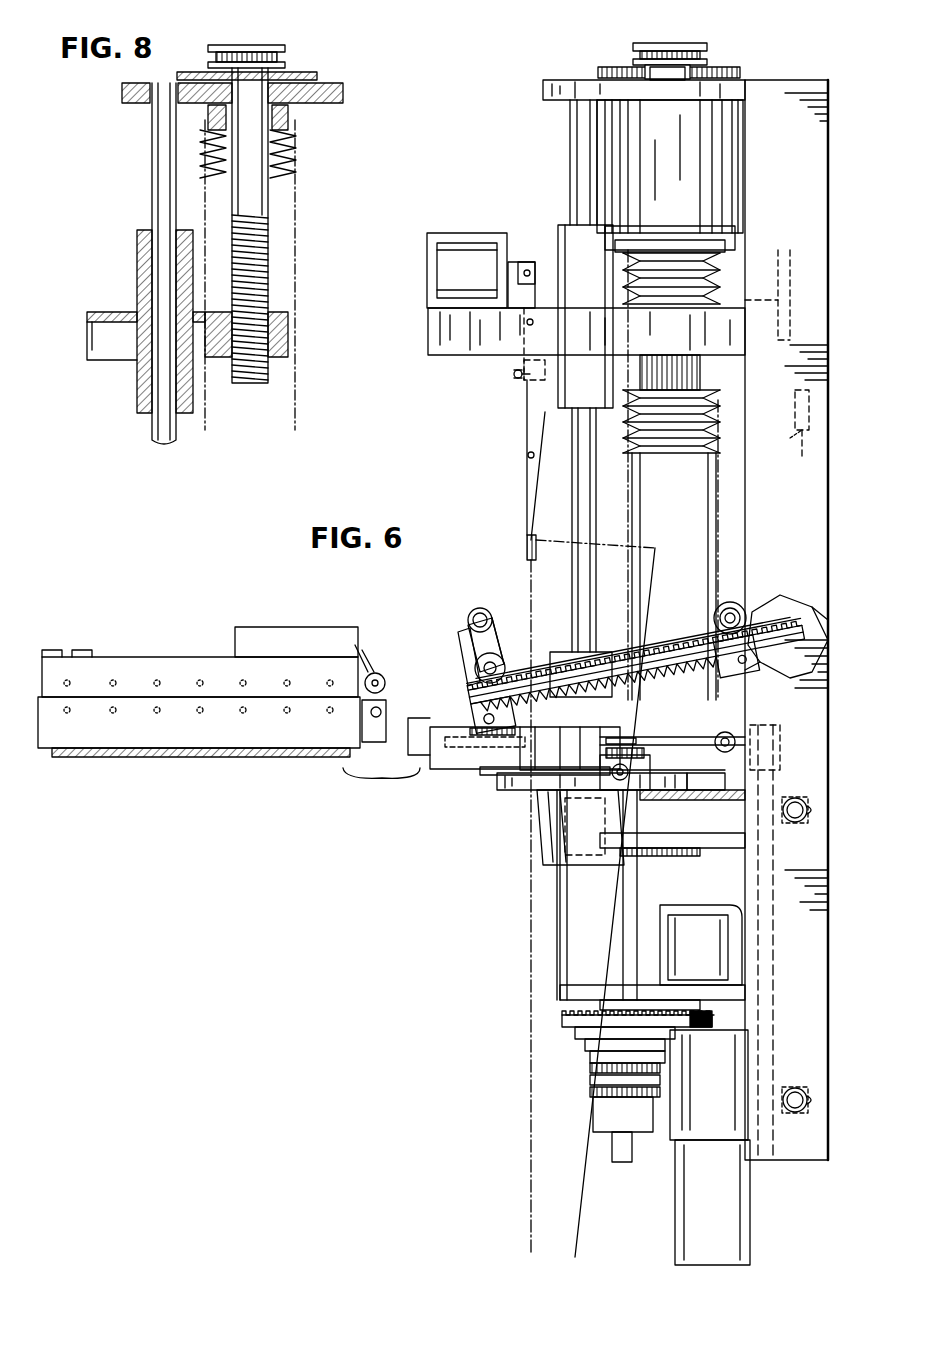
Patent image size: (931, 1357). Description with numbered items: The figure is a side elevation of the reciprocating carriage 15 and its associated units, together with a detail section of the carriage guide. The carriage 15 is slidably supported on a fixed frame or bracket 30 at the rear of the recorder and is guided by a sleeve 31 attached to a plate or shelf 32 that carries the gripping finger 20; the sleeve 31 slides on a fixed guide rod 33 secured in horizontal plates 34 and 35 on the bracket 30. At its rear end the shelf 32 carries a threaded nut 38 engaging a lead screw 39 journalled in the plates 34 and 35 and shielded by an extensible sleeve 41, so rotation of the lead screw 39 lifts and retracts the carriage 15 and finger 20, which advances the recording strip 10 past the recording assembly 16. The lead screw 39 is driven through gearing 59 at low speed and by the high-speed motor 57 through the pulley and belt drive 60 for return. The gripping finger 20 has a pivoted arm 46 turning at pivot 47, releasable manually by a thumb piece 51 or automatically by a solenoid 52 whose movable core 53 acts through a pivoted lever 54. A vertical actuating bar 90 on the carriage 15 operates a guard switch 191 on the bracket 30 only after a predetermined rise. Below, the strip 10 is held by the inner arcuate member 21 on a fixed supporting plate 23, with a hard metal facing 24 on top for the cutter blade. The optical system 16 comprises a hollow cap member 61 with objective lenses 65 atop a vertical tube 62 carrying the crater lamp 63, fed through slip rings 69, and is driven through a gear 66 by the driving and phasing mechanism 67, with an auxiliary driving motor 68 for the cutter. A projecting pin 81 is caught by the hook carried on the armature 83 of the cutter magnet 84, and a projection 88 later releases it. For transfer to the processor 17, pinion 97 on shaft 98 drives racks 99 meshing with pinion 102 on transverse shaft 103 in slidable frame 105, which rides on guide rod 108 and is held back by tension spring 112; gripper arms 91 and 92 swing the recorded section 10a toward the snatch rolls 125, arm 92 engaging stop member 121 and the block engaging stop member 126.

In FIG. 6, the recording strip 10 is at (530, 938).
In FIG. 6, the recorded section 10a is at (645, 560).
In FIG. 6, the reciprocating carriage 15 is at (475, 358).
In FIG. 6, the recording assembly 16 is at (648, 798).
In FIG. 6, the processing unit 17 is at (198, 650).
In FIG. 6, the gripping finger 20 is at (522, 545).
In FIG. 6, the inner arcuate member 21 is at (503, 787).
In FIG. 6, the fixed supporting plate 23 is at (720, 792).
In FIG. 6, the hard metal facing 24 is at (688, 774).
In FIG. 6, the fixed frame or bracket 30 is at (785, 92).
In FIG. 8, the sleeve 31 is at (140, 256).
In FIG. 6, the sleeve 31 is at (560, 235).
In FIG. 8, the plate or shelf 32 is at (105, 345).
In FIG. 6, the plate or shelf 32 is at (428, 330).
In FIG. 8, the fixed guide rod 33 is at (155, 157).
In FIG. 6, the fixed guide rod 33 is at (575, 166).
In FIG. 8, the horizontal plate 34 is at (330, 90).
In FIG. 6, the horizontal plate 34 is at (548, 86).
In FIG. 6, the horizontal plate 35 is at (560, 652).
In FIG. 8, the threaded nut 38 is at (286, 336).
In FIG. 8, the lead screw 39 is at (258, 244).
In FIG. 8, the extensible sleeve 41 is at (296, 152).
In FIG. 6, the extensible sleeve 41 is at (708, 415).
In FIG. 6, the pivoted arm 46 is at (527, 472).
In FIG. 6, the pivot 47 is at (528, 452).
In FIG. 6, the thumb piece 51 is at (513, 376).
In FIG. 6, the solenoid 52 is at (458, 243).
In FIG. 6, the movable core 53 is at (510, 262).
In FIG. 6, the pivoted lever 54 is at (522, 300).
In FIG. 6, the high-speed drive motor 57 is at (720, 148).
In FIG. 8, the gearing 59 is at (300, 73).
In FIG. 6, the gearing 59 is at (612, 66).
In FIG. 8, the pulley and belt drive 60 is at (278, 52).
In FIG. 6, the pulley and belt drive 60 is at (700, 46).
In FIG. 6, the hollow cap member 61 is at (640, 770).
In FIG. 6, the vertical tube 62 is at (620, 890).
In FIG. 6, the crater lamp 63 is at (622, 1158).
In FIG. 6, the objective lens 65 is at (612, 776).
In FIG. 6, the gear 66 is at (565, 1022).
In FIG. 6, the driving and phasing mechanism 67 is at (682, 1200).
In FIG. 6, the auxiliary driving motor 68 is at (697, 920).
In FIG. 6, the slip rings 69 is at (588, 1082).
In FIG. 6, the projecting pin 81 is at (612, 730).
In FIG. 6, the pivoted armature 83 is at (660, 735).
In FIG. 6, the cutter magnet 84 is at (722, 736).
In FIG. 6, the projection 88 is at (626, 748).
In FIG. 6, the vertical actuating bar 90 is at (778, 262).
In FIG. 6, the pivoted arm 91 is at (510, 768).
In FIG. 6, the pivoted arm 92 is at (463, 770).
In FIG. 6, the pinion 97 is at (740, 612).
In FIG. 6, the shaft 98 is at (720, 610).
In FIG. 6, the rack 99 is at (660, 650).
In FIG. 6, the pinion 102 is at (500, 645).
In FIG. 6, the transverse shaft 103 is at (476, 668).
In FIG. 6, the slidable frame 105 is at (478, 608).
In FIG. 6, the guide rod 108 is at (672, 640).
In FIG. 6, the tension spring 112 is at (692, 672).
In FIG. 6, the stop member 121 is at (436, 760).
In FIG. 6, the snatch rolls 125 is at (378, 672).
In FIG. 6, the stop member 126 is at (460, 635).
In FIG. 6, the guard switch 191 is at (791, 434).